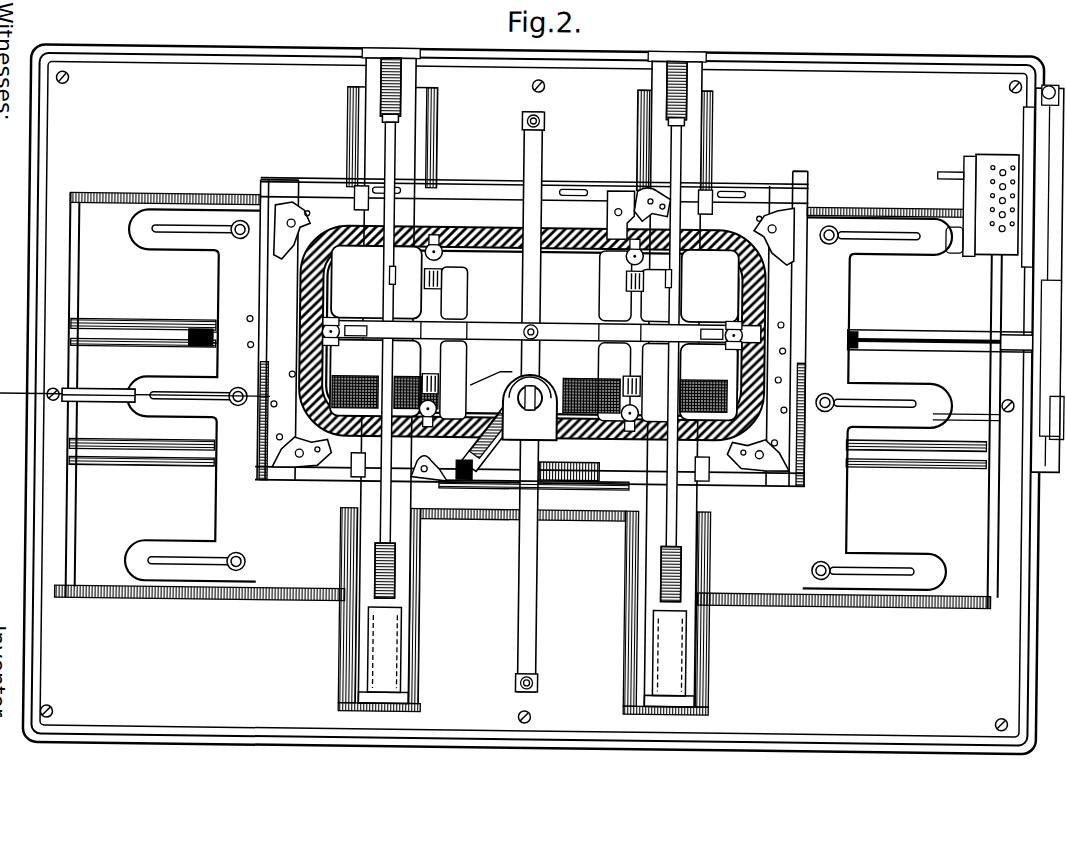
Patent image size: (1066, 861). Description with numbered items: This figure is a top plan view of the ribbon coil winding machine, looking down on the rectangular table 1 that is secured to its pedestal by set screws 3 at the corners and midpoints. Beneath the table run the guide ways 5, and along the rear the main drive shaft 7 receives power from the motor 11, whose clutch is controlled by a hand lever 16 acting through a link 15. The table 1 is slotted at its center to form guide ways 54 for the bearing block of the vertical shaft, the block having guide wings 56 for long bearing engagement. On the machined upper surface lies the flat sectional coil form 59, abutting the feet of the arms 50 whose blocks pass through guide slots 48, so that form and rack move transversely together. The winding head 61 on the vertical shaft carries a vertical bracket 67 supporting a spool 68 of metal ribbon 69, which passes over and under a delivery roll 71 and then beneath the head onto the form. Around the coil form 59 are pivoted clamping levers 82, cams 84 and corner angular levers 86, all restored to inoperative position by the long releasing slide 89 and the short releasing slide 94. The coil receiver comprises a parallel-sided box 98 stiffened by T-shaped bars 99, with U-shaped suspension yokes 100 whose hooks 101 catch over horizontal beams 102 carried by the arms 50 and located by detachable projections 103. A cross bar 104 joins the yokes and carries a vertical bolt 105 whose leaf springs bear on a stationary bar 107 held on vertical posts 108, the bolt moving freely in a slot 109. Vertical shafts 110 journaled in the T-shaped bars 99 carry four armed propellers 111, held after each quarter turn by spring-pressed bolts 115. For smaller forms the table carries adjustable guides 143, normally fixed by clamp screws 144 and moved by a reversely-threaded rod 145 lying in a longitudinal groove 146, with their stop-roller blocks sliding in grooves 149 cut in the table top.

The table 1 is at (533, 399).
The set screws 3 is at (65, 84).
The guide ways 5 is at (388, 50).
The main drive shaft 7 is at (536, 48).
The motor 11 is at (1045, 375).
The link 15 is at (1046, 274).
The hand lever 16 is at (1032, 100).
The guide slots 48 is at (414, 640).
The arms 50 is at (377, 102).
The guide ways 54 is at (470, 384).
The guide wings 56 is at (503, 390).
The coil form 59 is at (302, 346).
The winding head 61 is at (545, 378).
The vertical bracket 67 is at (562, 380).
The spool 68 is at (560, 462).
The metal ribbon 69 is at (513, 420).
The delivery roll 71 is at (470, 450).
The lever 82 is at (605, 220).
The cam 84 is at (640, 194).
The angular lever 86 is at (286, 218).
The releasing slide 89 is at (472, 184).
The short releasing slide 94 is at (258, 290).
The box 98 is at (563, 258).
The T-shaped bars 99 is at (428, 315).
The suspension yoke 100 is at (385, 298).
The hooks 101 is at (392, 276).
The horizontal beams 102 is at (388, 302).
The detachable projections 103 is at (392, 230).
The cross bar 104 is at (492, 325).
The vertical bolt 105 is at (534, 328).
The stationary bar 107 is at (540, 622).
The vertical posts 108 is at (541, 121).
The slot 109 is at (546, 488).
The vertical shafts 110 is at (334, 329).
The four armed propellers 111 is at (436, 240).
The spring-pressed bolts 115 is at (440, 284).
The adjustable guides 143 is at (217, 272).
The clamp screws 144 is at (240, 244).
The reversely-threaded rod 145 is at (190, 350).
The longitudinal groove 146 is at (138, 324).
The grooves 149 is at (112, 408).